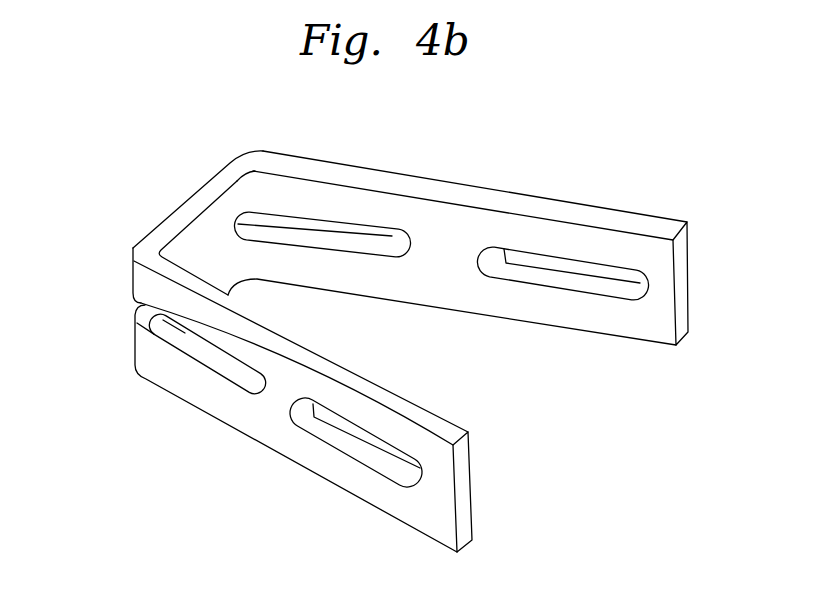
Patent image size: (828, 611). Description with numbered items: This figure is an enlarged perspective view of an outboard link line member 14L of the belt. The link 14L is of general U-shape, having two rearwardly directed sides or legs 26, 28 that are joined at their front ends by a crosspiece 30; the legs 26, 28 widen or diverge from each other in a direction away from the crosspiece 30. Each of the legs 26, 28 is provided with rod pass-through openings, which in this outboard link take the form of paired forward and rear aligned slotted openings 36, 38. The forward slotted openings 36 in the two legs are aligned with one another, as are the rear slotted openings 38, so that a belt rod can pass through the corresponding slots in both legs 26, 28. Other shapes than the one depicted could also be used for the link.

The outboard link line member 14L is at (338, 175).
The leg 26 is at (262, 420).
The leg 28 is at (445, 223).
The crosspiece 30 is at (193, 235).
The forward slotted opening 36 is at (320, 237).
The rear slotted opening 38 is at (547, 282).